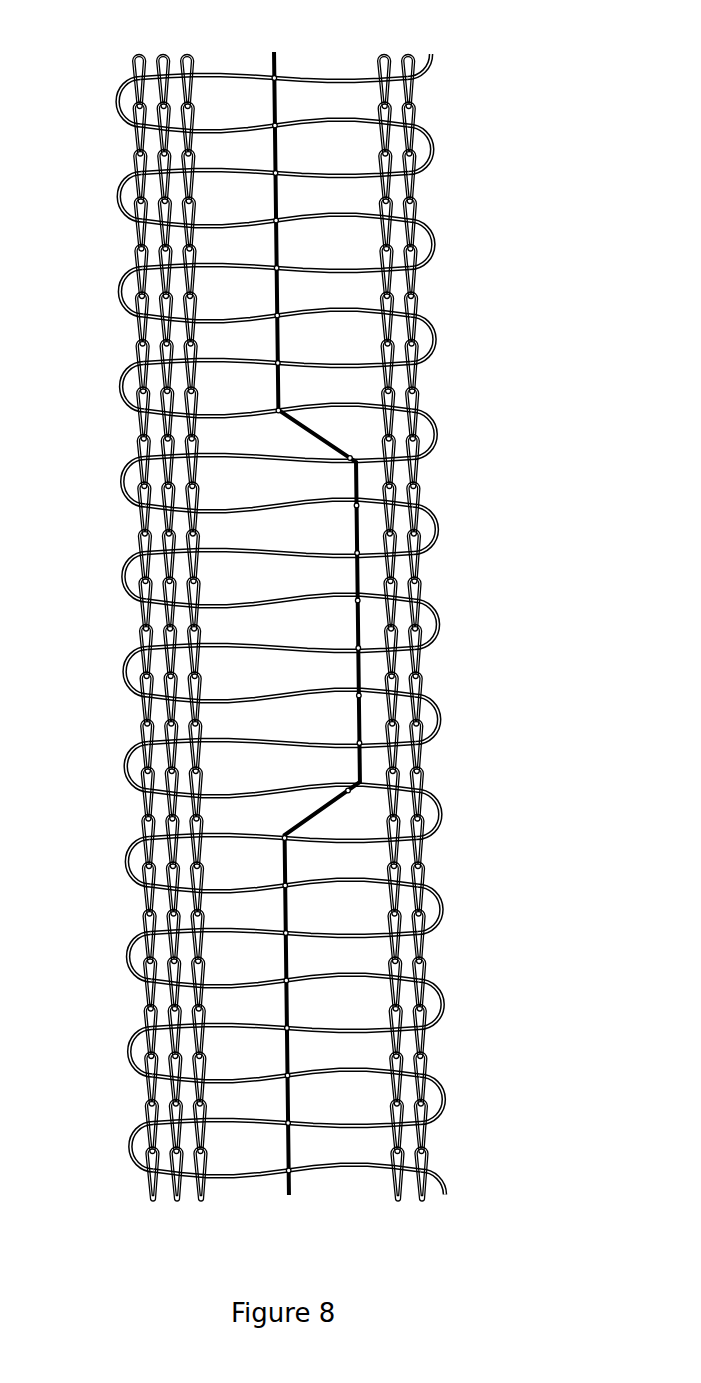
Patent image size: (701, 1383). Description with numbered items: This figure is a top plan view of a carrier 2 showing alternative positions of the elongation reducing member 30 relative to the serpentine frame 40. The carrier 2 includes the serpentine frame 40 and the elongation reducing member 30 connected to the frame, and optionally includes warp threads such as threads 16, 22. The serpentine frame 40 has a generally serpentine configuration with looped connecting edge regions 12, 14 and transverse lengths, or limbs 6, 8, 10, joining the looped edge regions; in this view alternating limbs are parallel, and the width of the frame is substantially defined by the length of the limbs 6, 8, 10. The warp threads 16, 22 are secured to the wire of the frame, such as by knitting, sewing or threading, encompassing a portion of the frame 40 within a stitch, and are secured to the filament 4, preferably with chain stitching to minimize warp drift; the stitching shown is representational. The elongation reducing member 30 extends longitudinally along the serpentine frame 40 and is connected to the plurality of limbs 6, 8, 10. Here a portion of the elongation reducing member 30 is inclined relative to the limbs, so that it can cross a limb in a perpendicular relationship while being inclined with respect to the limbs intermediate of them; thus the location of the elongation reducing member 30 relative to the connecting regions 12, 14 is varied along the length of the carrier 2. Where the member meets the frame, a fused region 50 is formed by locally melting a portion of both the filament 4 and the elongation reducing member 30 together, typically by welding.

The carrier 2 is at (292, 640).
The filament 4 is at (223, 1178).
The limb 6 is at (365, 1127).
The limb 8 is at (222, 1077).
The limb 10 is at (350, 1028).
The looped connecting edge region 12 is at (122, 482).
The looped connecting edge region 14 is at (433, 242).
The warp thread 16 is at (202, 1200).
The warp thread 22 is at (422, 1200).
The elongation reducing member 30 is at (276, 58).
The serpentine frame 40 is at (432, 890).
The fused region 50 is at (357, 650).